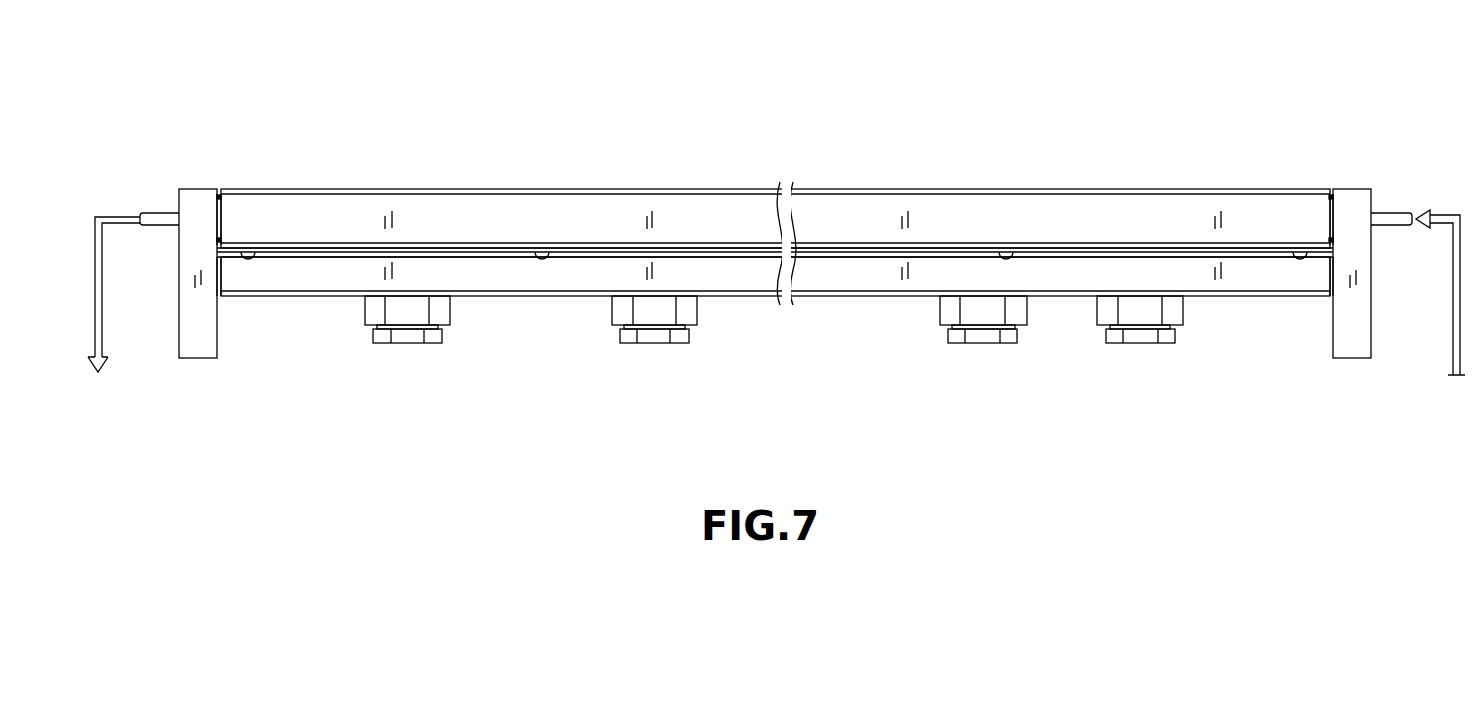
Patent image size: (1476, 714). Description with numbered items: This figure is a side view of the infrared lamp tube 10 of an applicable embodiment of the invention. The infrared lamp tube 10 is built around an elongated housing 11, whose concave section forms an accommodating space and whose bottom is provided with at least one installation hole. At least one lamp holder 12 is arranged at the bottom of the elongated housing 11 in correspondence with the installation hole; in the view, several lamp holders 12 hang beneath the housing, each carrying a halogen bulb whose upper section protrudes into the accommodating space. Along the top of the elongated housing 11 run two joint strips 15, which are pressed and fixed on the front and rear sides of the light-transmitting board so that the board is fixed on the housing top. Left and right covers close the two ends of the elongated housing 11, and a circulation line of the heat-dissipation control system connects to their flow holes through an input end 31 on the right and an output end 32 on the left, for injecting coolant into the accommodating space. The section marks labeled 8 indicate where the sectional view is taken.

The infrared lamp tube 10 is at (198, 98).
The elongated housing 11 is at (847, 282).
The lamp holder 12 is at (987, 315).
The joint strip 15 is at (683, 210).
The input end 31 is at (1397, 217).
The output end 32 is at (156, 217).
The section line 8- 8 is at (1140, 182).